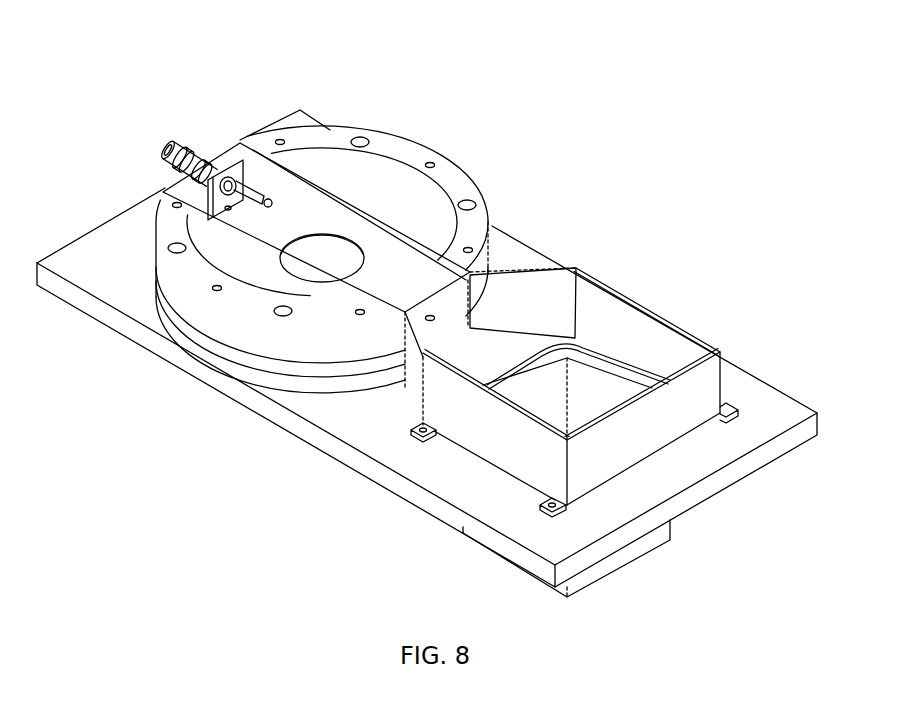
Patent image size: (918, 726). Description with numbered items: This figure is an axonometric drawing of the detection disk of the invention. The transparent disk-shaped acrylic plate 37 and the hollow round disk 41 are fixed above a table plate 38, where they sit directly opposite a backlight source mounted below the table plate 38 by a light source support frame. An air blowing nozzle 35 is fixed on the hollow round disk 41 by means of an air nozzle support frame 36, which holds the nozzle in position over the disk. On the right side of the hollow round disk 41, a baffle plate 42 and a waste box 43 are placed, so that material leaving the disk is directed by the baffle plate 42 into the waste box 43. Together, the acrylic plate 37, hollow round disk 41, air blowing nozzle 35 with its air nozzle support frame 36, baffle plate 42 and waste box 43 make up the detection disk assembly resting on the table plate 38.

The air blowing nozzle 35 is at (205, 160).
The air nozzle support frame 36 is at (230, 172).
The acrylic plate 37 is at (313, 255).
The table plate 38 is at (299, 110).
The hollow round disk 41 is at (365, 197).
The baffle plate 42 is at (527, 300).
The waste box 43 is at (583, 388).